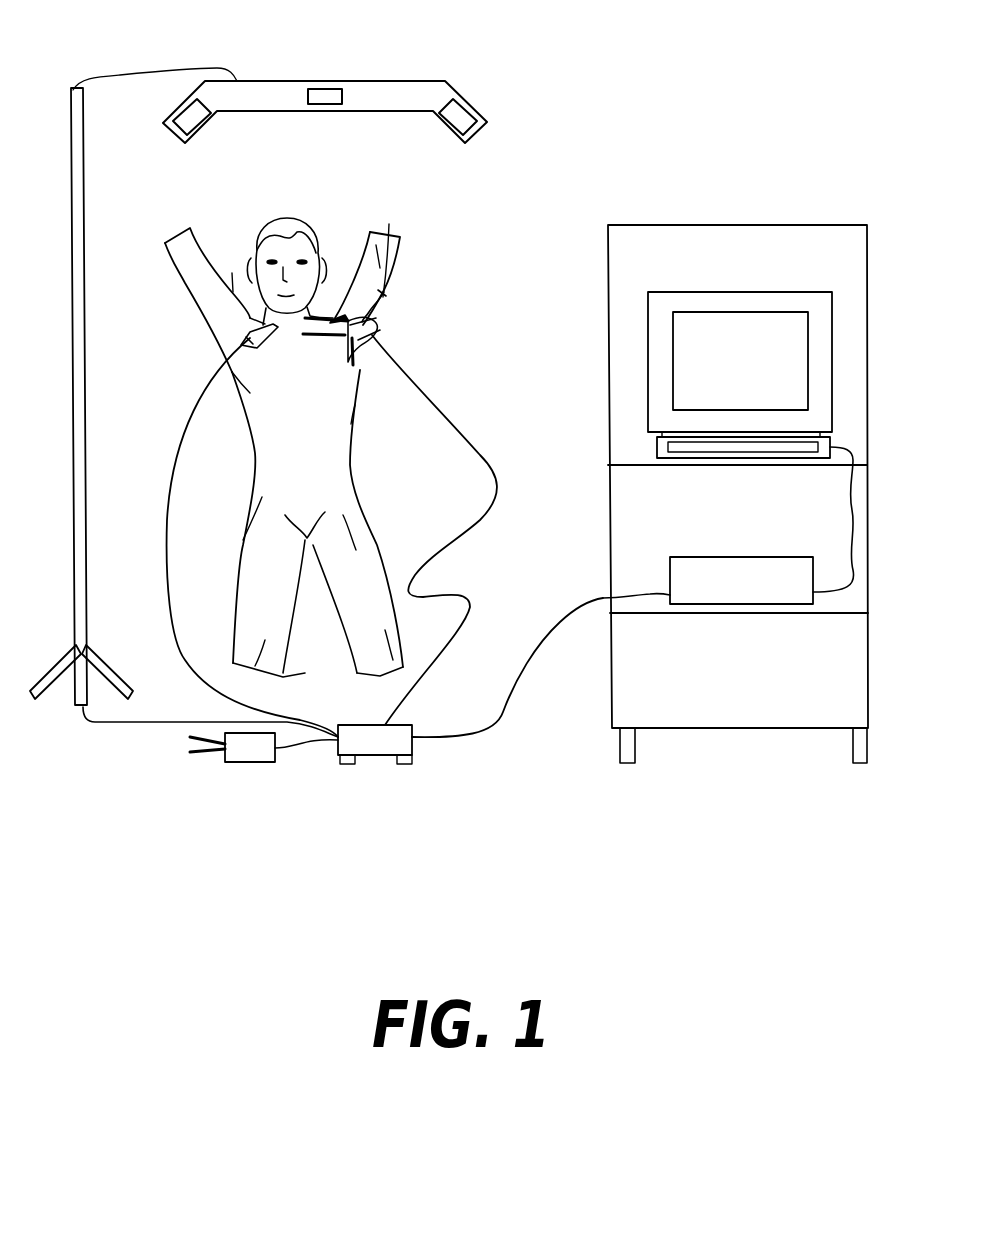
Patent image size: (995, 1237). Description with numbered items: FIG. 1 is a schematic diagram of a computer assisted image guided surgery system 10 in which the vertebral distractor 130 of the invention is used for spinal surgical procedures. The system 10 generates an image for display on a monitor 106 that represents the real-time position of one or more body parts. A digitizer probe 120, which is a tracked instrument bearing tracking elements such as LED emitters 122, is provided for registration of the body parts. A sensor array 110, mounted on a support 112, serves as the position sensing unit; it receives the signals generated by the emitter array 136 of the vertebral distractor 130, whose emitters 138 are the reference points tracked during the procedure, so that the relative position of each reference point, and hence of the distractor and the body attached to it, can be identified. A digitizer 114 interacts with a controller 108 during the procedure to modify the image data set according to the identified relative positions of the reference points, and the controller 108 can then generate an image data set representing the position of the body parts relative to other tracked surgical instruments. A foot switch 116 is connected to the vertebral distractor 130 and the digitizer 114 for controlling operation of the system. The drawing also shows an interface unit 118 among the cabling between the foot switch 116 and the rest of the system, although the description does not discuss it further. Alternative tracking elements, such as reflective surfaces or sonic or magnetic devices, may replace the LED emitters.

The computer assisted image guided surgery system 10 is at (575, 118).
The monitor 106 is at (730, 292).
The controller 108 is at (802, 465).
The sensor array 110 is at (278, 81).
The support 112 is at (90, 228).
The digitizer 114 is at (687, 557).
The foot switch 116 is at (247, 763).
The interface box 118 is at (382, 758).
The digitizer probe 120 is at (253, 316).
The LED emitters 122 is at (240, 338).
The vertebral distractor 130 is at (393, 302).
The emitter array 136 is at (389, 236).
The emitters 138 is at (389, 291).